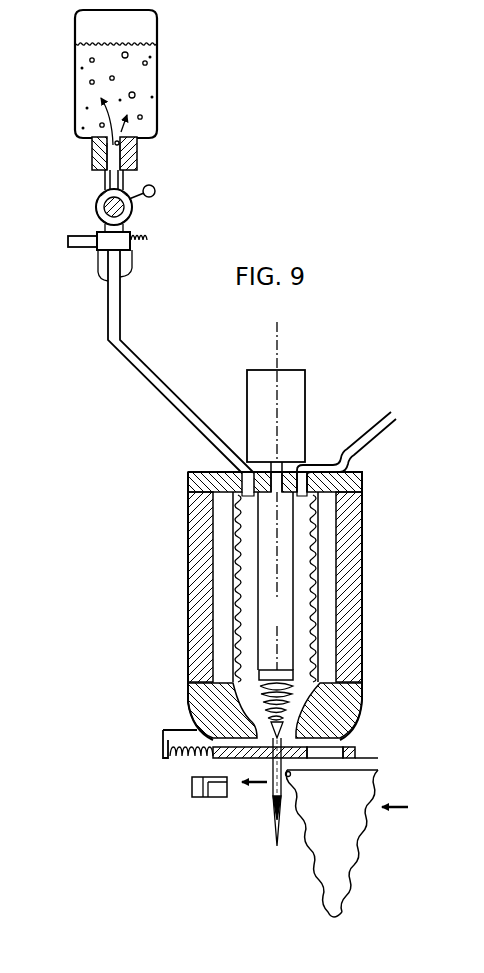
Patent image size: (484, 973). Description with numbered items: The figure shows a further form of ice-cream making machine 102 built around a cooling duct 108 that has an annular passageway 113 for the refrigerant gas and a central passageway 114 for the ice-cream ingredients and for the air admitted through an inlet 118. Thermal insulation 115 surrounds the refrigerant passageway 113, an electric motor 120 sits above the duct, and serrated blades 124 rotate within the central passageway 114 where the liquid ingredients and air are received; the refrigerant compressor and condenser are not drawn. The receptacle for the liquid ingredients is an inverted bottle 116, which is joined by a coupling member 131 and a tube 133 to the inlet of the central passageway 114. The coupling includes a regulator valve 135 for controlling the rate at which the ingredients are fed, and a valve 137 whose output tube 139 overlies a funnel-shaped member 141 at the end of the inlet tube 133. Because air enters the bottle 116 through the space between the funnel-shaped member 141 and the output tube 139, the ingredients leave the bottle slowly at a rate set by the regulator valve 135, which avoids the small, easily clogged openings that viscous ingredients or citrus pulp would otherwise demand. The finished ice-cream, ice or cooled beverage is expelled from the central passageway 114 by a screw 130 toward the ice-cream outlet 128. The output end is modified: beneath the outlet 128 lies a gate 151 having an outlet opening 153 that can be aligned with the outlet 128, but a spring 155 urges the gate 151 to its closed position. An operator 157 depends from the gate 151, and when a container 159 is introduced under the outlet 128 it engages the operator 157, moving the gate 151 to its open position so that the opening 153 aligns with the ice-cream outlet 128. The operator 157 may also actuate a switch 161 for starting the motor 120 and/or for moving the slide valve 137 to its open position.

The ice-cream making machine 102 is at (192, 460).
The cooling duct 108 is at (211, 511).
The annular passageway 113 is at (212, 607).
The central passageway 114 is at (236, 541).
The thermal insulation 115 is at (189, 635).
The inverted bottle 116 is at (78, 94).
The inlet 118 is at (367, 438).
The electric motor 120 is at (300, 369).
The serrated blades 124 is at (189, 559).
The ice-cream outlet 128 is at (290, 737).
The screw 130 is at (297, 697).
The coupling member 131 is at (138, 152).
The tube 133 is at (176, 390).
The regulator valve 135 is at (157, 197).
The valve 137 is at (96, 252).
The output tube 139 is at (108, 284).
The funnel-shaped member 141 is at (133, 270).
The gate 151 is at (221, 718).
The outlet opening 153 is at (336, 752).
The spring 155 is at (183, 761).
The operator 157 is at (272, 797).
The container 159 is at (341, 876).
The switch 161 is at (192, 790).